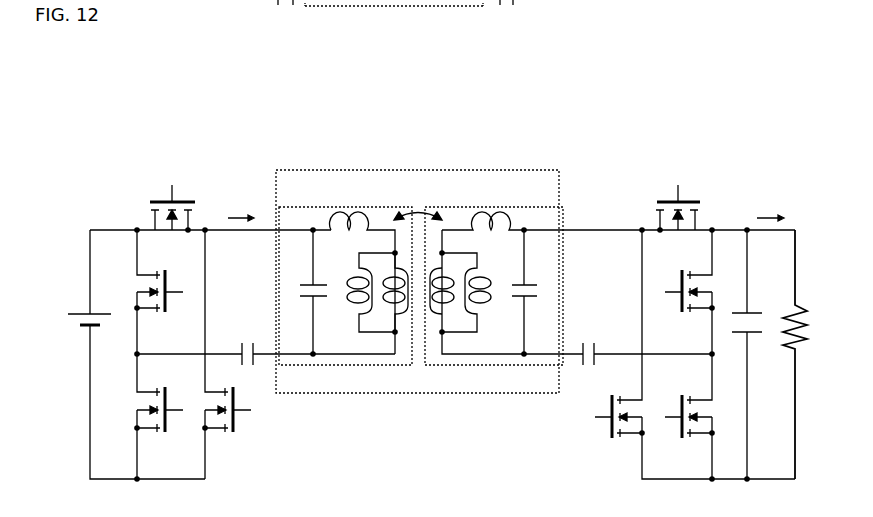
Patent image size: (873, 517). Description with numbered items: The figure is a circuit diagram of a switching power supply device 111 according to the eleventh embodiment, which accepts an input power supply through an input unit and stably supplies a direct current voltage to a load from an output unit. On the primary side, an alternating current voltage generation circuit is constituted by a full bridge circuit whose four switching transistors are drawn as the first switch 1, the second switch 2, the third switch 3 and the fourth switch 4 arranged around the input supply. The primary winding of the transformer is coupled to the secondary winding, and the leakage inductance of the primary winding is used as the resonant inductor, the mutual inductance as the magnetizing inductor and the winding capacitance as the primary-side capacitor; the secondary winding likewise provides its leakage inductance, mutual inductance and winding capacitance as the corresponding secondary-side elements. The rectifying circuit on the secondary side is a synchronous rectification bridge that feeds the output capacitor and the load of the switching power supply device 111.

The switching power supply device 111 is at (795, 125).
The switch Q1 1 is at (167, 416).
The switch Q2 2 is at (167, 292).
The switch Q3 3 is at (237, 354).
The switch Q4 4 is at (153, 206).